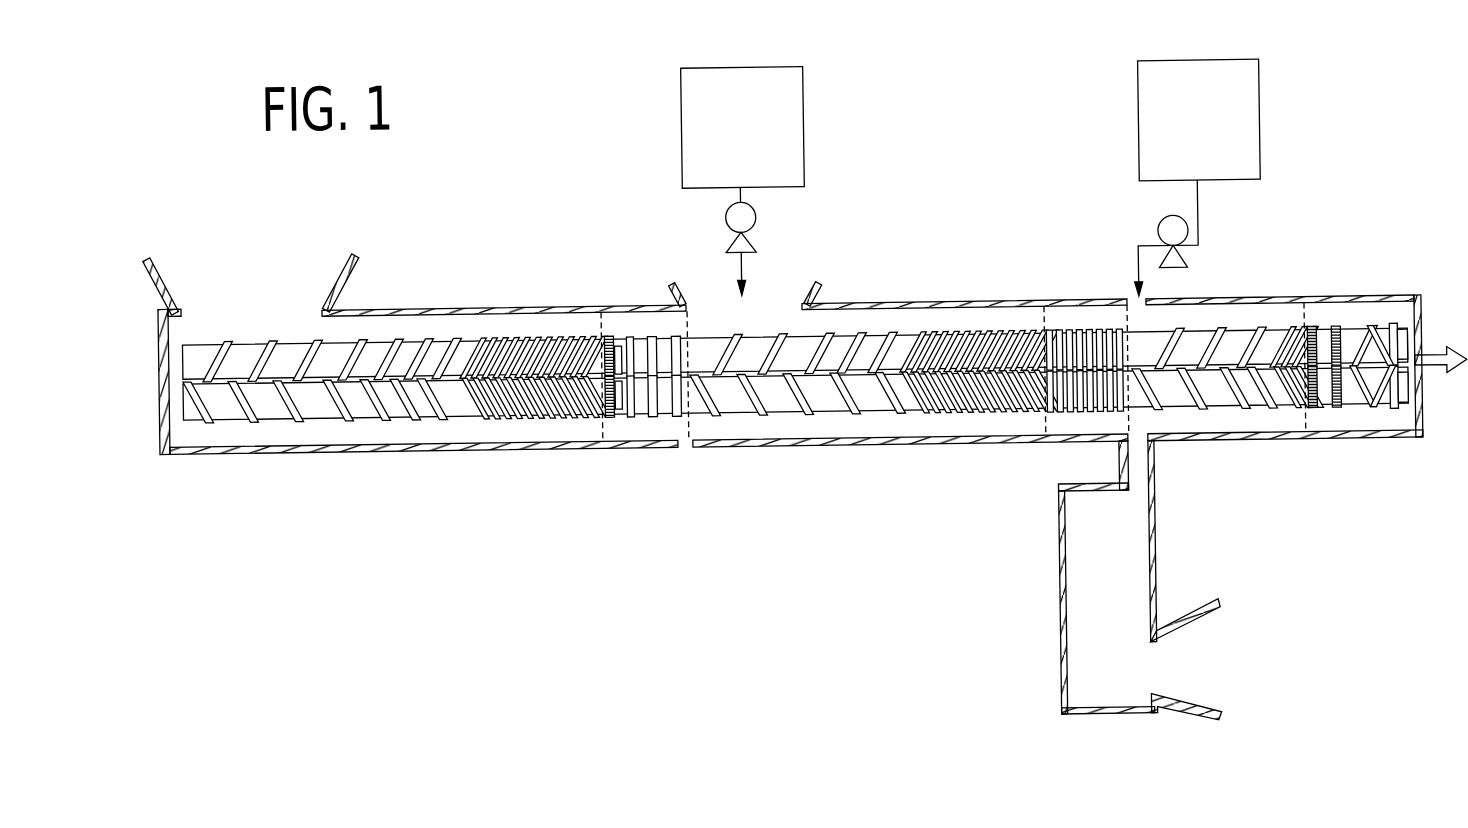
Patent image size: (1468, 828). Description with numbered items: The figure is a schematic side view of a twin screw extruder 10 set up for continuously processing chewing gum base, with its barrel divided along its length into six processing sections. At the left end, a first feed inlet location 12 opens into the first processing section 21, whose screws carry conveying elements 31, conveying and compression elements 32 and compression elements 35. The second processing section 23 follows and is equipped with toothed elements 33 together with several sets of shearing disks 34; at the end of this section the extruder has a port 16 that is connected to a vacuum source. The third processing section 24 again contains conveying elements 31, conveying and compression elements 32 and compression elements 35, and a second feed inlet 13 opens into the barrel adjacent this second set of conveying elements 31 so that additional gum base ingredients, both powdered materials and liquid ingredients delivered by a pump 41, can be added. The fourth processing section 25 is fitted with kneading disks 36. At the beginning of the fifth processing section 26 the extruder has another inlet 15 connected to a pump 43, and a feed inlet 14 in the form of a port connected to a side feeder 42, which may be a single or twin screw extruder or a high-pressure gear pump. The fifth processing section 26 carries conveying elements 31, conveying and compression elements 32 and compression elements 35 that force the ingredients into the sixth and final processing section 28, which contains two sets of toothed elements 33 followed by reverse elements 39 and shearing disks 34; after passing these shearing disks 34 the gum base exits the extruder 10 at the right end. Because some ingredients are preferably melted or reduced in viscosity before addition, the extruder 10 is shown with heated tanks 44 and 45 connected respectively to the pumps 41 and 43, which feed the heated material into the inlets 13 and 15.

The twin screw extruder 10 is at (184, 452).
The first feed inlet location 12 is at (318, 257).
The second feed inlet 13 is at (710, 295).
The feed inlet 14 is at (1137, 454).
The inlet 15 is at (1133, 301).
The port 16 is at (678, 446).
The first processing section 21 is at (376, 435).
The second processing section 23 is at (631, 435).
The third processing section 24 is at (836, 435).
The fourth processing section 25 is at (1069, 435).
The fifth processing section 26 is at (1219, 435).
The sixth processing section 28 is at (1349, 435).
The conveying elements 31 is at (207, 349).
The conveying and compression elements 32 is at (402, 343).
The toothed elements 33 is at (610, 334).
The shearing disks 34 is at (677, 338).
The compression elements 35 is at (507, 337).
The kneading disks 36 is at (1068, 335).
The reverse elements 39 is at (1372, 335).
The pump 41 is at (759, 223).
The side feeder 42 is at (1095, 577).
The pump 43 is at (1165, 223).
The heated tank 44 is at (793, 122).
The heated tank 45 is at (1247, 123).